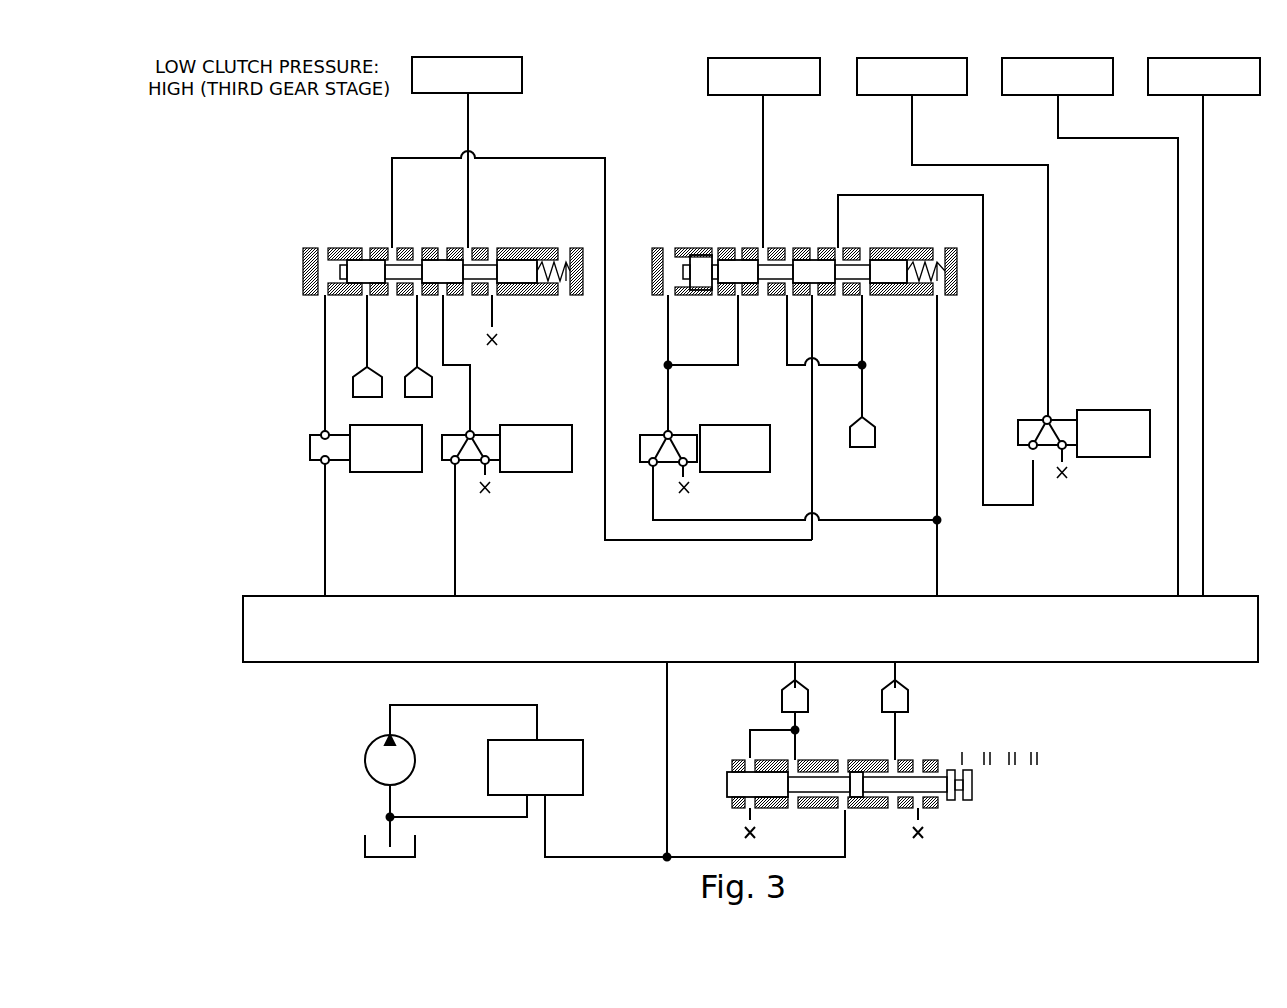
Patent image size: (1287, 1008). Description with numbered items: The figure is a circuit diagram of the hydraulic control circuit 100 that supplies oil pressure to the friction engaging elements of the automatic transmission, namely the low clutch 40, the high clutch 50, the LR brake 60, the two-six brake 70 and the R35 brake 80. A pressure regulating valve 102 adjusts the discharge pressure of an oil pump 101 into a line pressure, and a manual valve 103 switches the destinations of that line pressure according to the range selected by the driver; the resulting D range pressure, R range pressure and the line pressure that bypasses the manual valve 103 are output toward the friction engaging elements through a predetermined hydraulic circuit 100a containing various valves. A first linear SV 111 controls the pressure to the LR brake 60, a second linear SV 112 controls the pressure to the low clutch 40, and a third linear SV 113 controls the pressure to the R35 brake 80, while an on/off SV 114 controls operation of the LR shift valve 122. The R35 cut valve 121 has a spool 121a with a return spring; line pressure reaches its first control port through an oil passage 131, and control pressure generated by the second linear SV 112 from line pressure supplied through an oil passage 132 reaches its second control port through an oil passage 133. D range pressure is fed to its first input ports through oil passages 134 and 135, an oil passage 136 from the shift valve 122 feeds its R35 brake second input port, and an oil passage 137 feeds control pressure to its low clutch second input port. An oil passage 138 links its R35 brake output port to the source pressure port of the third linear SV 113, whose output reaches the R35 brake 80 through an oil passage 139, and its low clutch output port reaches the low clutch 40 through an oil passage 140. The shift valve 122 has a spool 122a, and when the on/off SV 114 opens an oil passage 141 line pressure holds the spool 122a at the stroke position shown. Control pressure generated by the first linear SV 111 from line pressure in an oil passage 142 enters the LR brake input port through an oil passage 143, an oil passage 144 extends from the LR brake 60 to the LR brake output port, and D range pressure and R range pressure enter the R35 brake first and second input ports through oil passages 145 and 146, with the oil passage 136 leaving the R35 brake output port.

The hydraulic control circuit 100 is at (312, 158).
The predetermined hydraulic circuit 100a is at (1050, 594).
The oil pump 101 is at (415, 752).
The pressure regulating valve 102 is at (565, 740).
The manual valve 103 is at (940, 818).
The first linear solenoid valve 111 is at (542, 472).
The second linear solenoid valve 112 is at (742, 472).
The third linear solenoid valve 113 is at (1115, 457).
The on/off solenoid valve 114 is at (390, 472).
The R35 cut valve 121 is at (814, 263).
The spool of cut valve 121a is at (862, 263).
The LR shift valve 122 is at (447, 253).
The spool of shift valve 122a is at (490, 263).
The oil passage 131 is at (938, 447).
The oil passage 132 is at (873, 518).
The oil passage 133 is at (668, 338).
The oil passage 134 is at (863, 345).
The oil passage 135 is at (795, 367).
The oil passage 136 is at (390, 198).
The oil passage 137 is at (705, 365).
The oil passage 138 is at (983, 312).
The oil passage 139 is at (1048, 293).
The oil passage 140 is at (765, 190).
The oil passage 141 is at (323, 363).
The oil passage 142 is at (457, 517).
The oil passage 143 is at (472, 397).
The oil passage 144 is at (467, 205).
The oil passage 145 is at (415, 330).
The oil passage 146 is at (363, 332).
The low clutch 40 is at (792, 95).
The high clutch 50 is at (1090, 95).
The LR brake 60 is at (492, 95).
The 26 brake 70 is at (1223, 97).
The R35 brake 80 is at (938, 97).